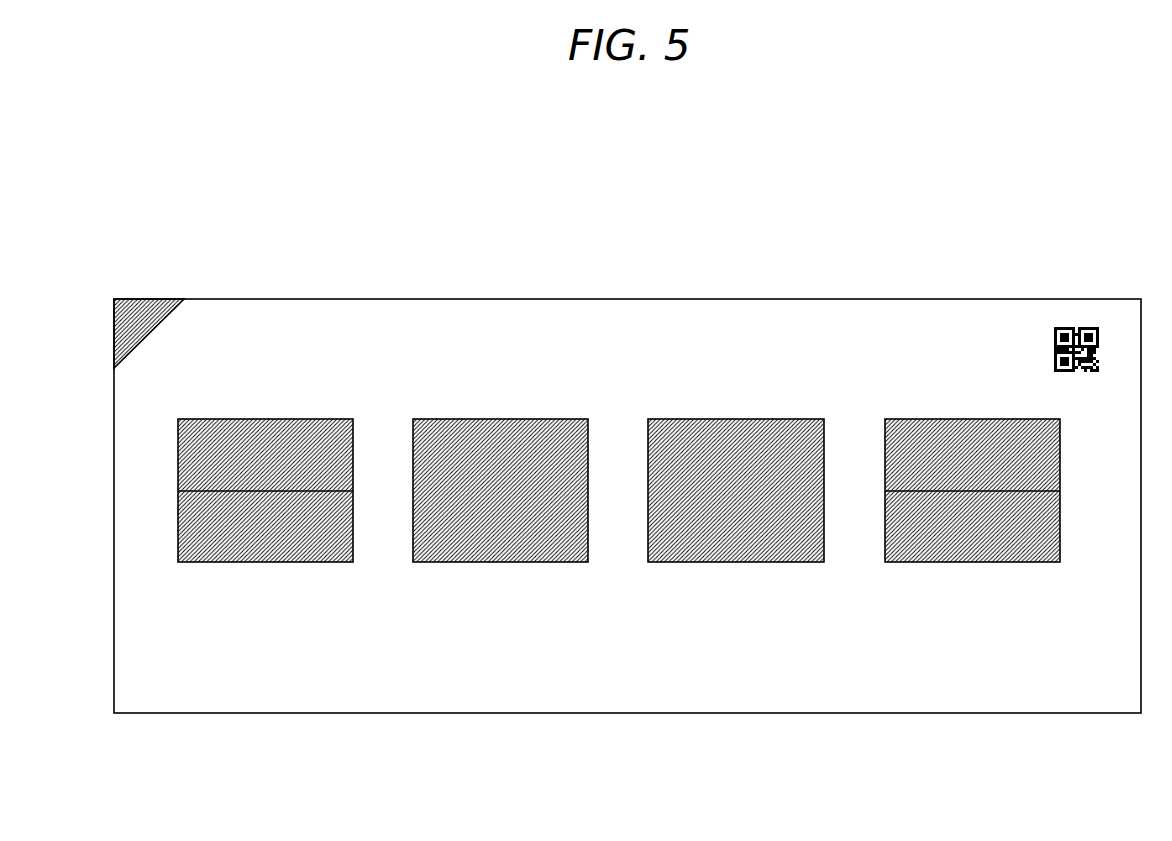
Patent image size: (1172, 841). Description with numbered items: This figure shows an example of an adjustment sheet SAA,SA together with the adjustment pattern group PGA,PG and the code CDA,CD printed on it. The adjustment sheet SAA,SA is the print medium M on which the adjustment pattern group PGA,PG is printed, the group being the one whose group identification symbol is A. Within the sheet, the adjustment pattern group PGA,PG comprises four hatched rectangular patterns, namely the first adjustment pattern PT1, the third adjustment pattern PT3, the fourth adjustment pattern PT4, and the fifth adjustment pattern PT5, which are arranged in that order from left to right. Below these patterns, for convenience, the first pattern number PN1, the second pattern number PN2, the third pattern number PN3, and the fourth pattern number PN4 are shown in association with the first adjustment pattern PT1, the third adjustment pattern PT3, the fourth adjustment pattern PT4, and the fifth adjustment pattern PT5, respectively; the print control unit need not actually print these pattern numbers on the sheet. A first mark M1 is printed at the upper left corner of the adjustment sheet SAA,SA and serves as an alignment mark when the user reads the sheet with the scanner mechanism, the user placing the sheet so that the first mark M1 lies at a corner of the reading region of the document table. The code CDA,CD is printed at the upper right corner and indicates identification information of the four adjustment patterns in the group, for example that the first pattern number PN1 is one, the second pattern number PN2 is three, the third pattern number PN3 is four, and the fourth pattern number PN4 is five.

The print medium M is at (602, 299).
The first mark M1 is at (149, 299).
The adjustment sheet SAA,SA is at (806, 244).
The code CDA,CD is at (1073, 328).
The adjustment pattern group PGA,PG is at (804, 357).
The first adjustment pattern PT1 is at (265, 419).
The third adjustment pattern PT3 is at (501, 419).
The fourth adjustment pattern PT4 is at (737, 419).
The fifth adjustment pattern PT5 is at (973, 419).
The first pattern number PN1 is at (265, 633).
The second pattern number PN2 is at (500, 633).
The third pattern number PN3 is at (737, 633).
The fourth pattern number PN4 is at (972, 633).